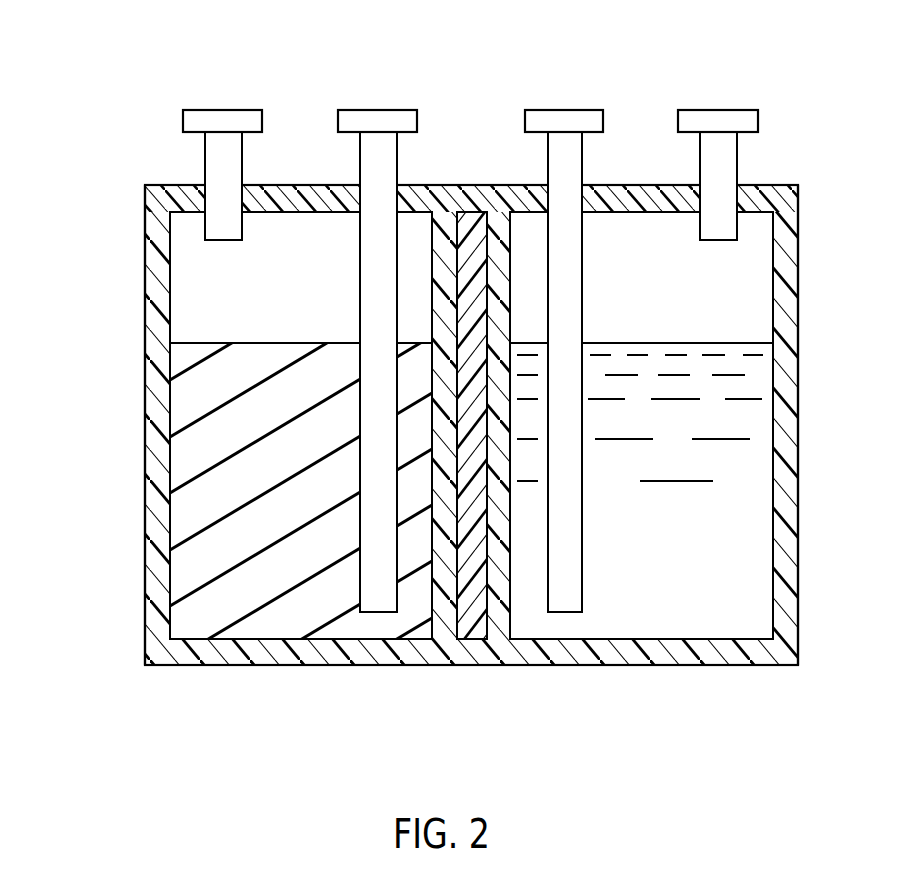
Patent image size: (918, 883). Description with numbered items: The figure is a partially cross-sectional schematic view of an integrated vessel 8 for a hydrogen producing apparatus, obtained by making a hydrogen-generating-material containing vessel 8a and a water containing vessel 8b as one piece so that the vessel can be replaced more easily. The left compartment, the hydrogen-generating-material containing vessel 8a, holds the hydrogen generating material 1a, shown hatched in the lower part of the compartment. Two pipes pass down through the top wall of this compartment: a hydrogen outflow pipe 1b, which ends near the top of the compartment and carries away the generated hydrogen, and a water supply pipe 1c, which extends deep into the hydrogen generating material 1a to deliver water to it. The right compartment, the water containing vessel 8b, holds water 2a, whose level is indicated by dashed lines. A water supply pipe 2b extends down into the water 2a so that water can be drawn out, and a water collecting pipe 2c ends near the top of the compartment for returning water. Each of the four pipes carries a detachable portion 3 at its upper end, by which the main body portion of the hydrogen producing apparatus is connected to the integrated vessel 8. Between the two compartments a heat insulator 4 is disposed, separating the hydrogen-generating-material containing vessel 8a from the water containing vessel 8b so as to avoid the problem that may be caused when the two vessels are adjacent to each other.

The integrated vessel 8 is at (499, 86).
The hydrogen-generating-material containing vessel 8a is at (143, 448).
The water containing vessel 8b is at (785, 392).
The hydrogen generating material 1a is at (205, 518).
The hydrogen outflow pipe 1b is at (228, 160).
The water supply pipe 1c is at (375, 158).
The water 2a is at (740, 522).
The water supply pipe 2b is at (565, 158).
The water collecting pipe 2c is at (720, 160).
The detachable portion 3 is at (262, 120).
The heat insulator 4 is at (483, 612).